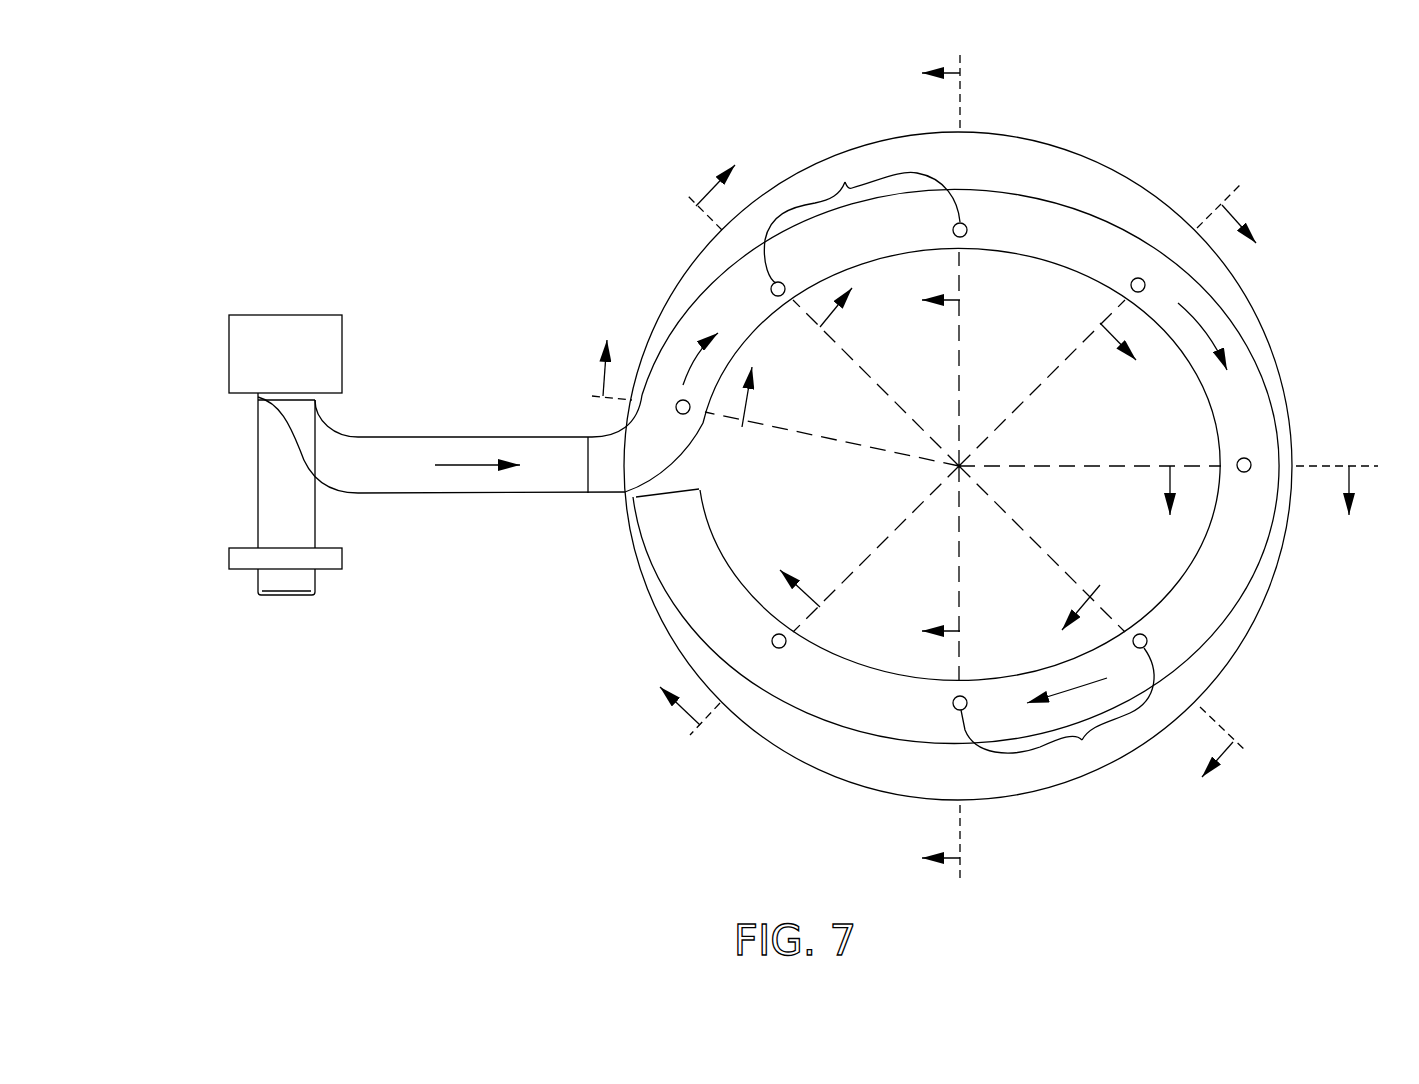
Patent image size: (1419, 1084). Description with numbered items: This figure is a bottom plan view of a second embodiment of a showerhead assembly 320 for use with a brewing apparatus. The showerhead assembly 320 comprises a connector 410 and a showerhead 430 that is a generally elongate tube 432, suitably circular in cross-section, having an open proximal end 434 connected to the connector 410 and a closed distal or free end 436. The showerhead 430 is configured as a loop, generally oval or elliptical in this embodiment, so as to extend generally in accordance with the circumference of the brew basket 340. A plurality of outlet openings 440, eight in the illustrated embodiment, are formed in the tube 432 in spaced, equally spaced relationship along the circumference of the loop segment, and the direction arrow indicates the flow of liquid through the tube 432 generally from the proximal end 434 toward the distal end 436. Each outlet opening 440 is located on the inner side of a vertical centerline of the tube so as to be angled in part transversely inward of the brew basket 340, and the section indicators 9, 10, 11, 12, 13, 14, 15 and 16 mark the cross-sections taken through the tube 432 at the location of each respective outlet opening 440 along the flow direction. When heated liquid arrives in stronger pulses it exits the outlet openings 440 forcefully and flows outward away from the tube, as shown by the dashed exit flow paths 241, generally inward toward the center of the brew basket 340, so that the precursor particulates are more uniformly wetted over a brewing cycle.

The showerhead assembly 320 is at (752, 465).
The brew basket 340 is at (1107, 170).
The connector 410 is at (845, 182).
The showerhead 430 is at (705, 598).
The tube 432 is at (1240, 606).
The proximal end 434 is at (370, 437).
The distal end 436 is at (640, 505).
The outlet openings 440 is at (1082, 740).
The exit flow paths 241 is at (1008, 409).
The section line 9 is at (751, 668).
The section line 10 is at (960, 744).
The section line 11 is at (1172, 666).
The section line 12 is at (1259, 473).
The section line 13 is at (1153, 264).
The section line 14 is at (962, 186).
The section line 15 is at (751, 265).
The section line 16 is at (653, 401).